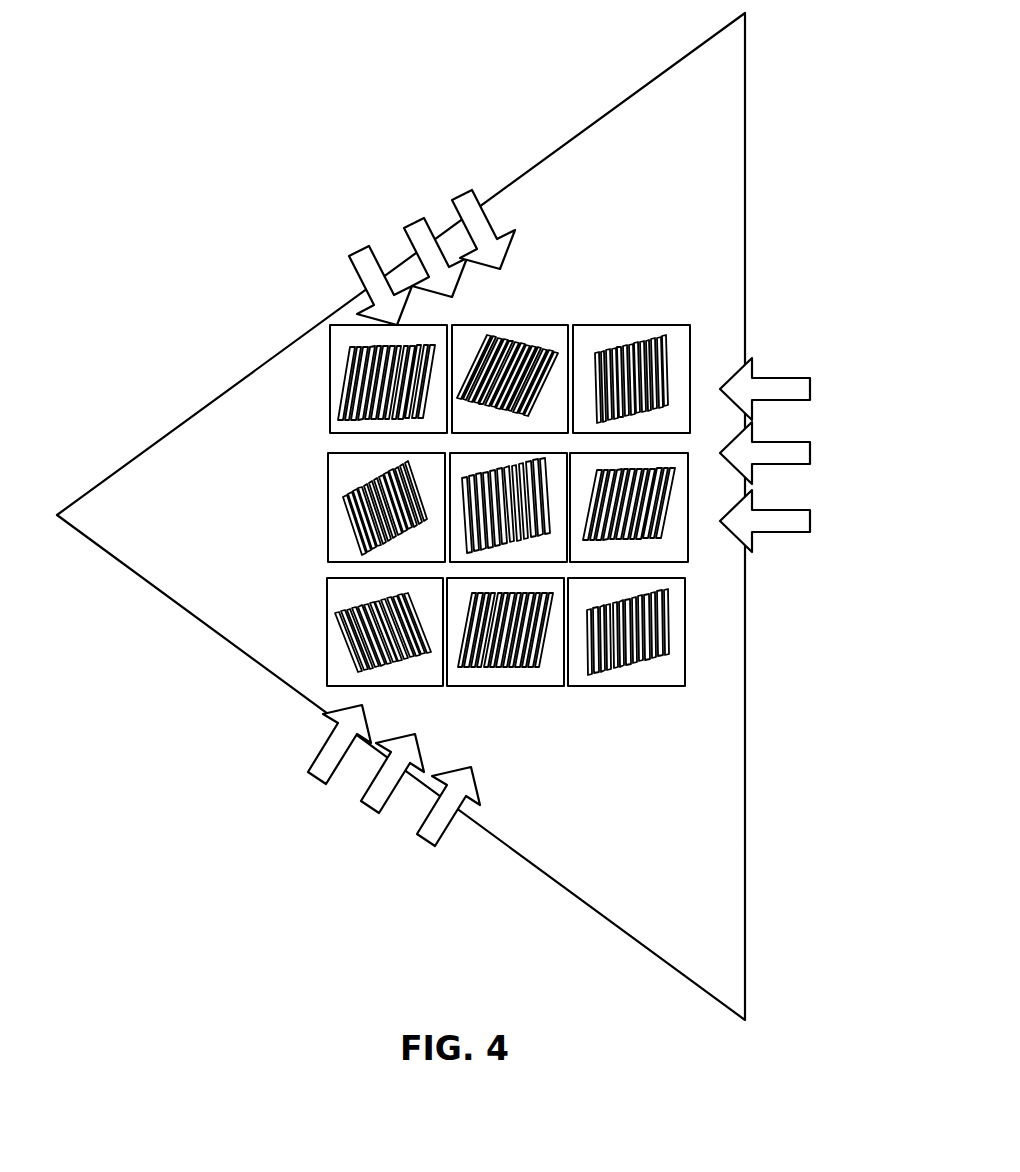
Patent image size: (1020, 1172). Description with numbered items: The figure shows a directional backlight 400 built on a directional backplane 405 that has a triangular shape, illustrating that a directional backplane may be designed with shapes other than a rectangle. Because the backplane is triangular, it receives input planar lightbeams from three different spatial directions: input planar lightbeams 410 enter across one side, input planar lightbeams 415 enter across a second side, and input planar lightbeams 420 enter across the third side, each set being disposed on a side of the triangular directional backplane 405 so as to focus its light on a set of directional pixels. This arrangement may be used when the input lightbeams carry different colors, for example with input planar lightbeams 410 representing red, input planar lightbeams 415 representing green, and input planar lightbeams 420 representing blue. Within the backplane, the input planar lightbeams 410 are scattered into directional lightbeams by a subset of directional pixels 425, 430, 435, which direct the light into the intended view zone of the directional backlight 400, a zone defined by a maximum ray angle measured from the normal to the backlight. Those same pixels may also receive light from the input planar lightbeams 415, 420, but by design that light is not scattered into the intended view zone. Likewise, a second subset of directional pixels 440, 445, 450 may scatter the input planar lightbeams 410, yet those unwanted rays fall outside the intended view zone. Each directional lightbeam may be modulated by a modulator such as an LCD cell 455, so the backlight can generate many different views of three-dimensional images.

The directional backlight 400 is at (460, 102).
The directional backplane 405 is at (182, 455).
The input planar lightbeams 410 is at (463, 202).
The input planar lightbeams 415 is at (785, 373).
The input planar lightbeams 420 is at (322, 763).
The directional pixel 425 is at (347, 362).
The directional pixel 430 is at (502, 347).
The directional pixel 435 is at (617, 367).
The directional pixel 440 is at (355, 618).
The directional pixel 445 is at (515, 653).
The directional pixel 450 is at (628, 648).
The LCD cell 455 is at (347, 427).